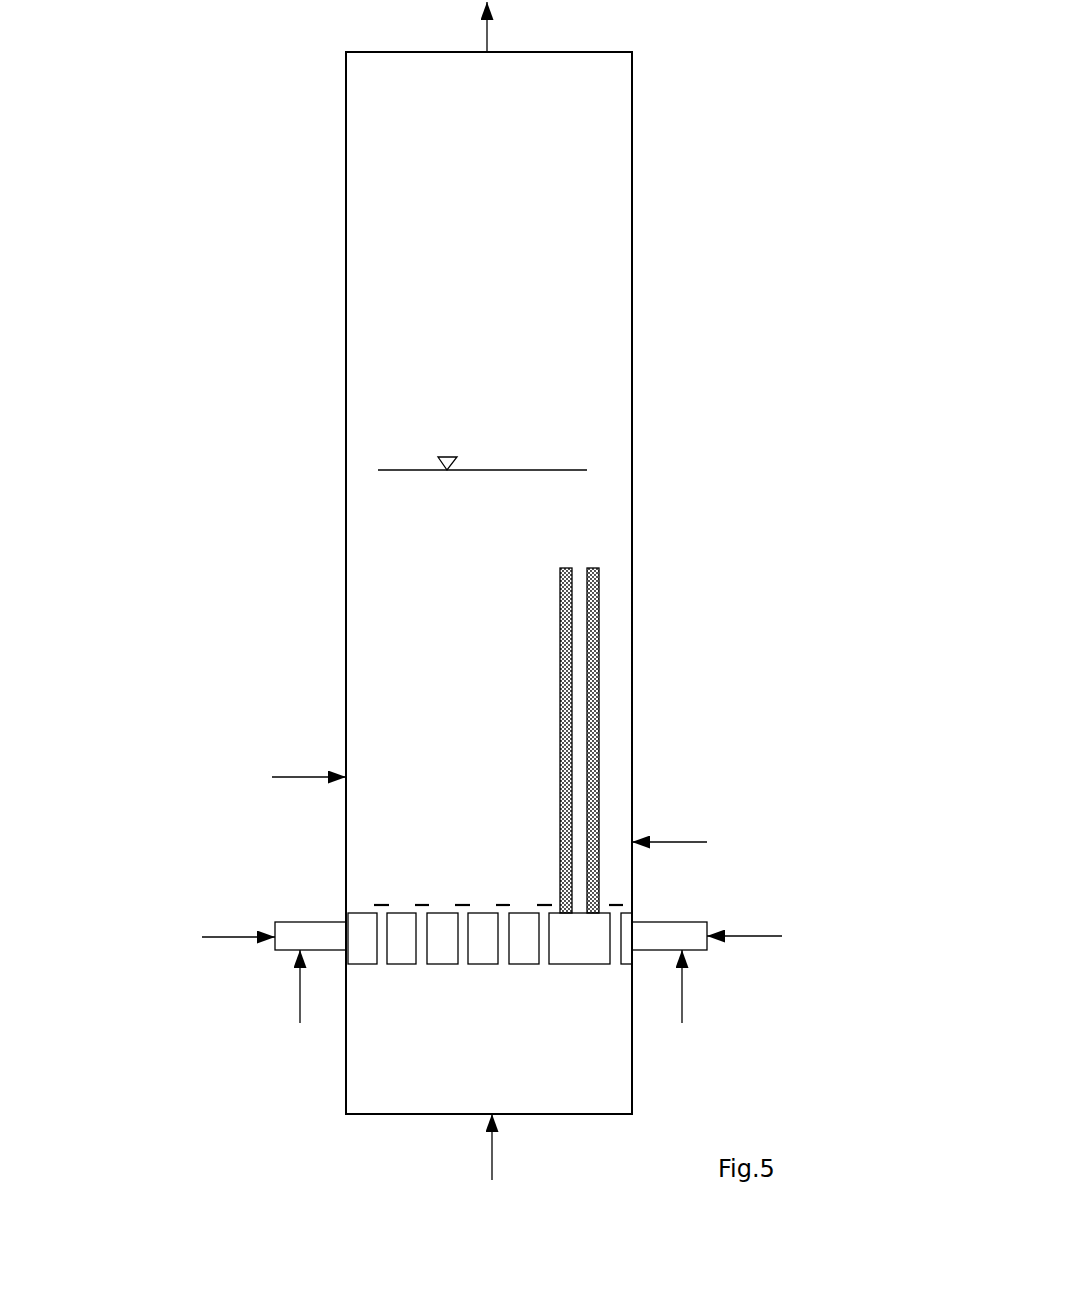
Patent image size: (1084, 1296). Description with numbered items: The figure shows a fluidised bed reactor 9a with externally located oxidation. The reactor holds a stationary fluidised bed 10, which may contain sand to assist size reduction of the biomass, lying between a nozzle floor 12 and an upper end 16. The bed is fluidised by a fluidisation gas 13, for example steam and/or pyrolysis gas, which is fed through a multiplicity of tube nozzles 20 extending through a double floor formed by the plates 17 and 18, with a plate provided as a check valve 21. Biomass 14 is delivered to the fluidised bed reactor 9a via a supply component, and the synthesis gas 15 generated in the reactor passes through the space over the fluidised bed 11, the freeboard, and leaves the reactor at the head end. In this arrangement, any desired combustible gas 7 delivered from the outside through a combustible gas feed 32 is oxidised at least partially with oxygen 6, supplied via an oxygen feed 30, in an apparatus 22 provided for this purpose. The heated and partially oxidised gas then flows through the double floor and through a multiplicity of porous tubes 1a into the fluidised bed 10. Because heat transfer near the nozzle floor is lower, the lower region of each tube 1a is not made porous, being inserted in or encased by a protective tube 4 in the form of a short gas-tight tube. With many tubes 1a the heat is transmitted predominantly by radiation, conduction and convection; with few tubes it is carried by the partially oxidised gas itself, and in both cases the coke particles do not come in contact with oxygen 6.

The fluidised bed reactor 9a is at (675, 129).
The space over the fluidised bed 11 is at (602, 253).
The stationary fluidised bed 10 is at (603, 518).
The upper end 16 is at (540, 470).
The synthesis gas 15 is at (506, 27).
The fluidisation gas 13 is at (508, 1148).
The porous tube 1a is at (597, 727).
The protective tube 4 is at (560, 878).
The plate 17 is at (403, 965).
The check valve 21 is at (460, 905).
The plate 18 is at (402, 908).
The tube nozzle 20 is at (465, 965).
The nozzle floor 12 is at (512, 988).
The apparatus 22 is at (313, 928).
The biomass 14 is at (489, 795).
The combustible gas 7 is at (492, 922).
The oxygen 6 is at (489, 987).
The oxygen feed 30 is at (270, 970).
The combustible gas feed 32 is at (712, 970).